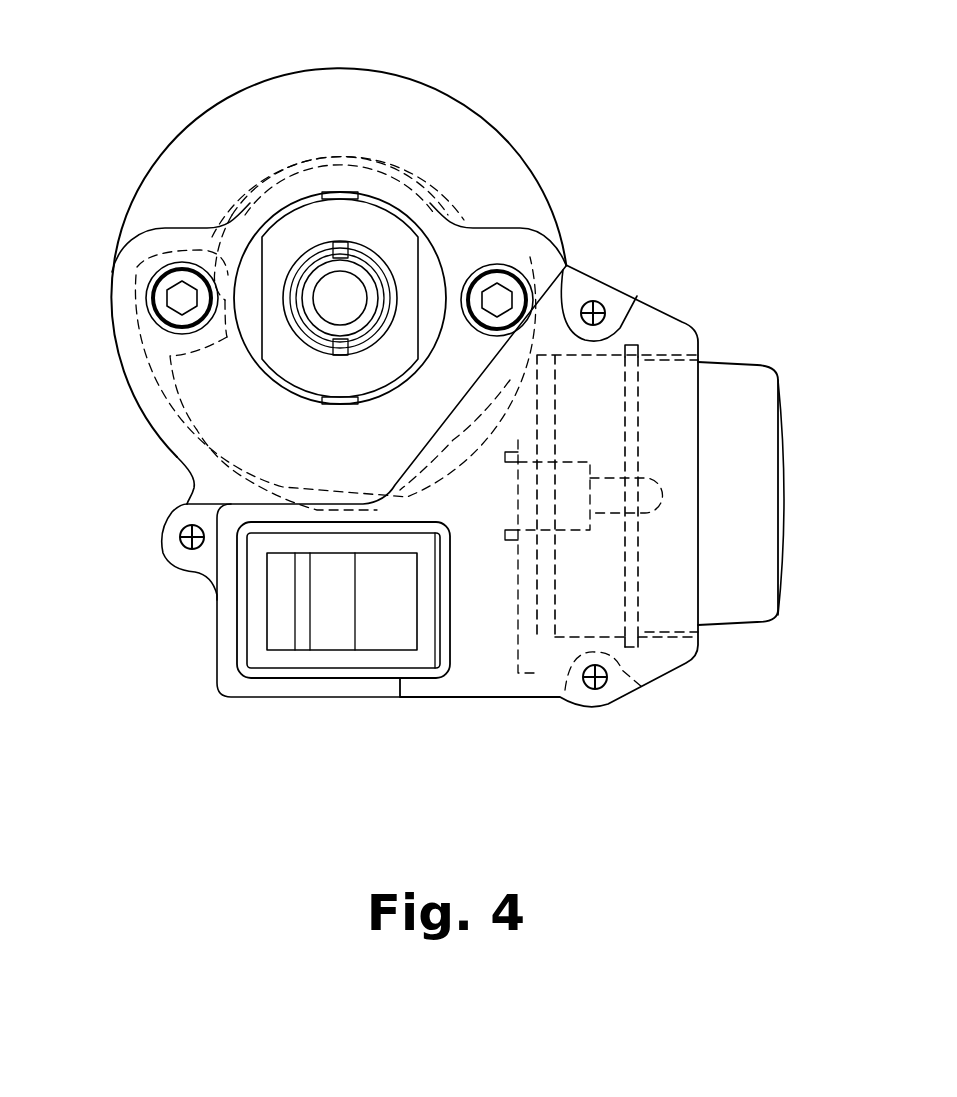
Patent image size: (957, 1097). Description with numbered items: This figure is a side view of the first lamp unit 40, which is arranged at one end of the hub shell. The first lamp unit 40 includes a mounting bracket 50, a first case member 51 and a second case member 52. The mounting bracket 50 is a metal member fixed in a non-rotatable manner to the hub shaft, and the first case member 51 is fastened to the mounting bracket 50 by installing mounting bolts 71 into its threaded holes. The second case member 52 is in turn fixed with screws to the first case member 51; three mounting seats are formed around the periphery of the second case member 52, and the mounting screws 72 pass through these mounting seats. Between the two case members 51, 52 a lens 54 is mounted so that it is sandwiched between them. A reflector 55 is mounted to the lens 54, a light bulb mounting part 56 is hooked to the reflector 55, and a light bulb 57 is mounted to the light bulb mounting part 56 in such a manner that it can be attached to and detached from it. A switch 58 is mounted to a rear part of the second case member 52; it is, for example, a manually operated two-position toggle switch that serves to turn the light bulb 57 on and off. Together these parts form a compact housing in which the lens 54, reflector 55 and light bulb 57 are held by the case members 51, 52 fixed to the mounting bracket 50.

The first lamp unit 40 is at (506, 91).
The mounting bracket 50 is at (433, 183).
The first case member 51 is at (405, 92).
The second case member 52 is at (682, 332).
The lens 54 is at (756, 378).
The reflector 55 is at (593, 652).
The light bulb mounting part 56 is at (513, 540).
The light bulb 57 is at (608, 517).
The switch 58 is at (323, 637).
The mounting bolts 71 is at (517, 278).
The mounting screws 72 is at (600, 305).